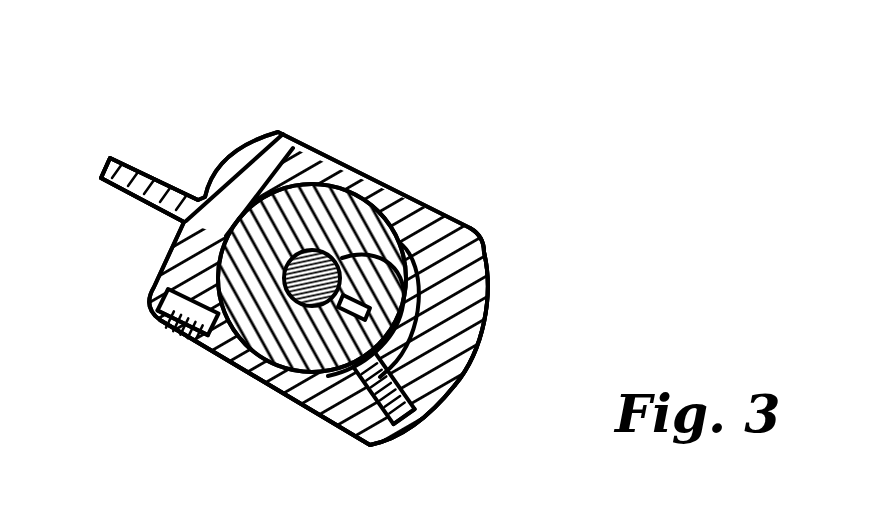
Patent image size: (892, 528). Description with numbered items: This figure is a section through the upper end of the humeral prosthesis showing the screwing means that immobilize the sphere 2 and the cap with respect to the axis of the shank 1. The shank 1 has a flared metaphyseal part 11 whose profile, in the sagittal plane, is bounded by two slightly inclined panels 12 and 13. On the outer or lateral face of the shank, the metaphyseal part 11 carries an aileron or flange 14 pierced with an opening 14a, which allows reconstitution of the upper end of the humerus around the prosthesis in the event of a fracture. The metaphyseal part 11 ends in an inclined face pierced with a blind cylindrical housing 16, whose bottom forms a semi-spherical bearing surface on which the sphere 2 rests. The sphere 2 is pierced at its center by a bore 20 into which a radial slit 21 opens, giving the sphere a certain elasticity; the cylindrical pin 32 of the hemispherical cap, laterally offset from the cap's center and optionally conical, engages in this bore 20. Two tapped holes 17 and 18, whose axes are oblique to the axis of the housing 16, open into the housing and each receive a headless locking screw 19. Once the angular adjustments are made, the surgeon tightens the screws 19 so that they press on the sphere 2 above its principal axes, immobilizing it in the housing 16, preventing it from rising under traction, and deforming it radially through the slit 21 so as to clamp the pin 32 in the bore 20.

The shank 1 is at (462, 178).
The sphere 2 is at (316, 390).
The metaphyseal part 11 is at (473, 267).
The inclined panel 12 is at (260, 392).
The inclined panel 13 is at (482, 226).
The flange 14 is at (180, 170).
The opening 14a is at (147, 172).
The cylindrical housing 16 is at (318, 180).
The tapped hole 17 is at (192, 290).
The tapped hole 18 is at (413, 380).
The locking screw 19 is at (400, 413).
The bore 20 is at (385, 227).
The radial slit 21 is at (380, 350).
The cylindrical pin 32 is at (290, 300).